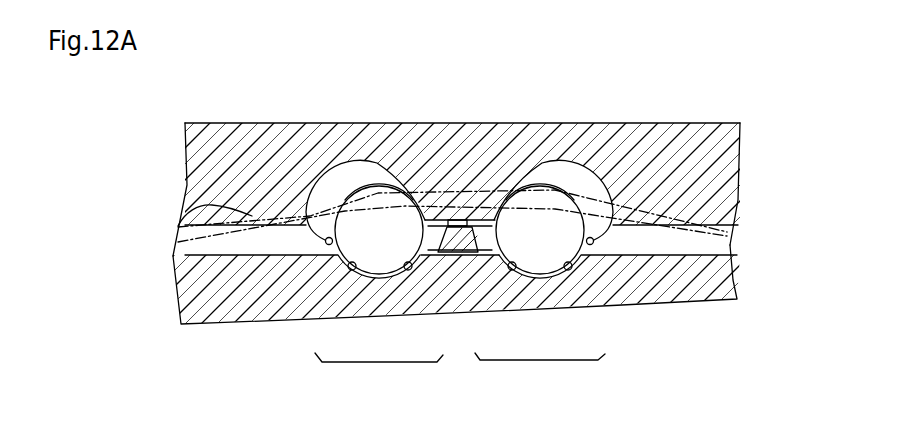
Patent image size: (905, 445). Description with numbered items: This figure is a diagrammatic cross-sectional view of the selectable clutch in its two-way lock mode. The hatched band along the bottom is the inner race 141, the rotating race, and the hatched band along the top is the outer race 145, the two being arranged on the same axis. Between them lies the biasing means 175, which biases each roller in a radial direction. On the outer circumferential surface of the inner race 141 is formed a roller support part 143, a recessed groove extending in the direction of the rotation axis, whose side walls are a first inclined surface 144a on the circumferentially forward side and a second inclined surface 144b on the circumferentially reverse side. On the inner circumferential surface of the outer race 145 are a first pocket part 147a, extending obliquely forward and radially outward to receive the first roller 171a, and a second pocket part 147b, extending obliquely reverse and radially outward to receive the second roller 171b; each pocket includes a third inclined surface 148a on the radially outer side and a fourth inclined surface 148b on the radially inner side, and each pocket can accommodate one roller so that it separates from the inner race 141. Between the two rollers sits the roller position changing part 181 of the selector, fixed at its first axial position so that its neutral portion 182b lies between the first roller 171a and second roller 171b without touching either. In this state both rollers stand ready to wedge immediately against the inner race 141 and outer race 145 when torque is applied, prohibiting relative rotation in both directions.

The inner race 141 is at (215, 283).
The outer race 145 is at (217, 162).
The biasing means 175 is at (190, 206).
The roller support part 143 is at (460, 369).
The first inclined surface 144a is at (357, 270).
The second inclined surface 144b is at (398, 270).
The first pocket part 147a is at (327, 182).
The second pocket part 147b is at (593, 183).
The third inclined surface 148a is at (418, 207).
The fourth inclined surface 148b is at (328, 244).
The first roller 171a is at (370, 180).
The second roller 171b is at (547, 187).
The roller position changing part 181 is at (463, 226).
The neutral portion 182b is at (452, 255).